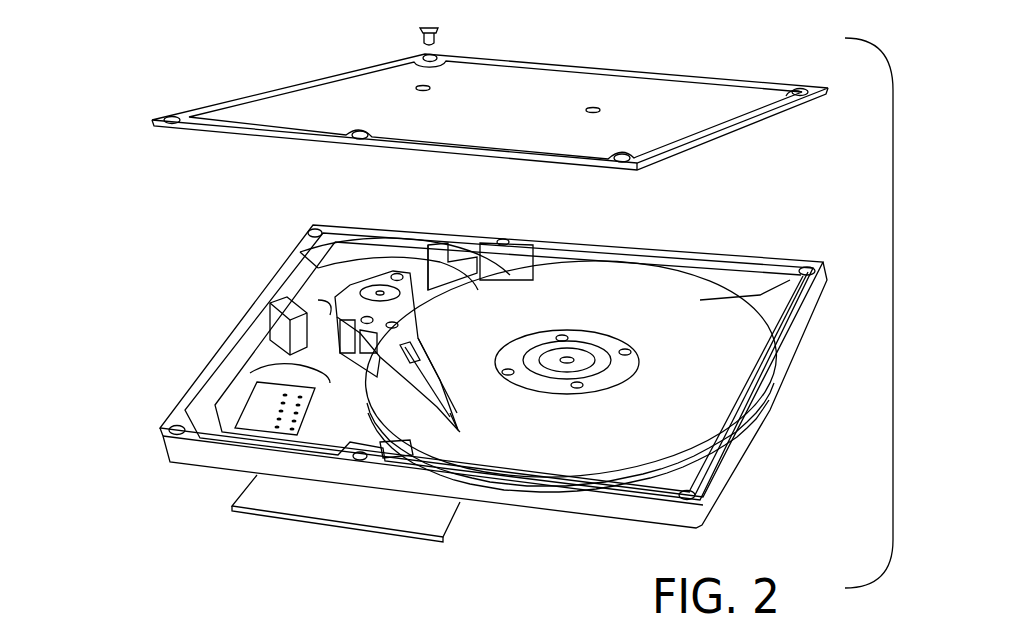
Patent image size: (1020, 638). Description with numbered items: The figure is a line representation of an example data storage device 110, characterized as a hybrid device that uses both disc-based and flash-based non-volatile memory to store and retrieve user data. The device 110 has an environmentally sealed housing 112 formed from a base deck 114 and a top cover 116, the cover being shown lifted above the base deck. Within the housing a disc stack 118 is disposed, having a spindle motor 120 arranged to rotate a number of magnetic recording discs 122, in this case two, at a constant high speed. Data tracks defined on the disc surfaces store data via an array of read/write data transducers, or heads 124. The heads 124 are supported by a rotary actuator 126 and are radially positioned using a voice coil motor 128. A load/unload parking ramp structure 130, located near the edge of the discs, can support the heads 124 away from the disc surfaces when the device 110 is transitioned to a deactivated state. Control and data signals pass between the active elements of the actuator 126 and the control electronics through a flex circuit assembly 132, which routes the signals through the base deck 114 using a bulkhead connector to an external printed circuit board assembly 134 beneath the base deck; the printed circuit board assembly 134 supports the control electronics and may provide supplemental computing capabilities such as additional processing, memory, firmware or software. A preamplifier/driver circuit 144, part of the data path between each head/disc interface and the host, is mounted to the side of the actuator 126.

The data storage device 110 is at (139, 90).
The housing 112 is at (208, 232).
The base deck 114 is at (755, 420).
The top cover 116 is at (590, 82).
The disc stack 118 is at (605, 271).
The spindle motor 120 is at (578, 353).
The magnetic recording discs 122 is at (563, 473).
The read/write data transducers (heads) 124 is at (463, 417).
The rotary actuator 126 is at (433, 352).
The voice coil motor (VCM) 128 is at (368, 242).
The load/unload parking ramp structure 130 is at (400, 458).
The flex circuit assembly 132 is at (270, 358).
The printed circuit board assembly (PCBA) 134 is at (282, 505).
The preamplifier/driver circuit (preamp) 144 is at (322, 308).